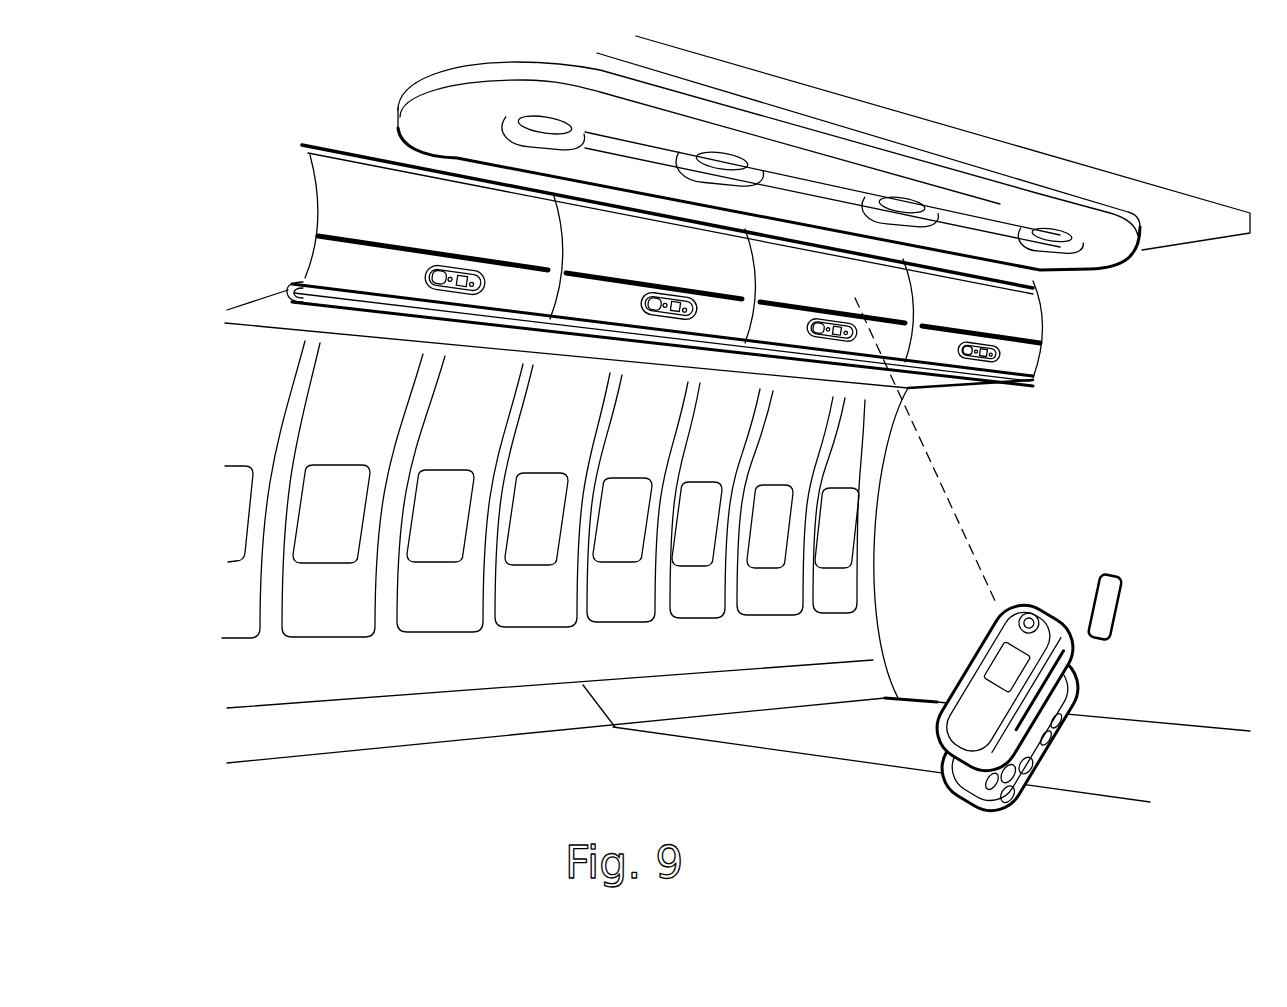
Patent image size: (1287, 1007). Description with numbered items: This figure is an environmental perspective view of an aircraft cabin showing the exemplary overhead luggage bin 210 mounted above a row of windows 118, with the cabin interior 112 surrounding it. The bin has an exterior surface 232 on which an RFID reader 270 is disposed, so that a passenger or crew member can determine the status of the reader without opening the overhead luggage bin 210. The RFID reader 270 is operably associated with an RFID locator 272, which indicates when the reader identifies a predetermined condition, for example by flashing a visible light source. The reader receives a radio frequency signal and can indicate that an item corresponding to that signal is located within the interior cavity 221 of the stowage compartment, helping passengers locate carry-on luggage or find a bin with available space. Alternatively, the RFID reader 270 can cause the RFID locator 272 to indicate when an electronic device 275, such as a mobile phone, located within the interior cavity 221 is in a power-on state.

The aircraft cabin 112 is at (466, 831).
The windows 118 is at (613, 543).
The overhead luggage bin 210 is at (353, 185).
The interior cavity 221 is at (485, 217).
The exterior surface 232 is at (470, 230).
The RFID reader 270 is at (680, 300).
The RFID locator 272 is at (657, 303).
The electronic device 275 is at (1093, 679).